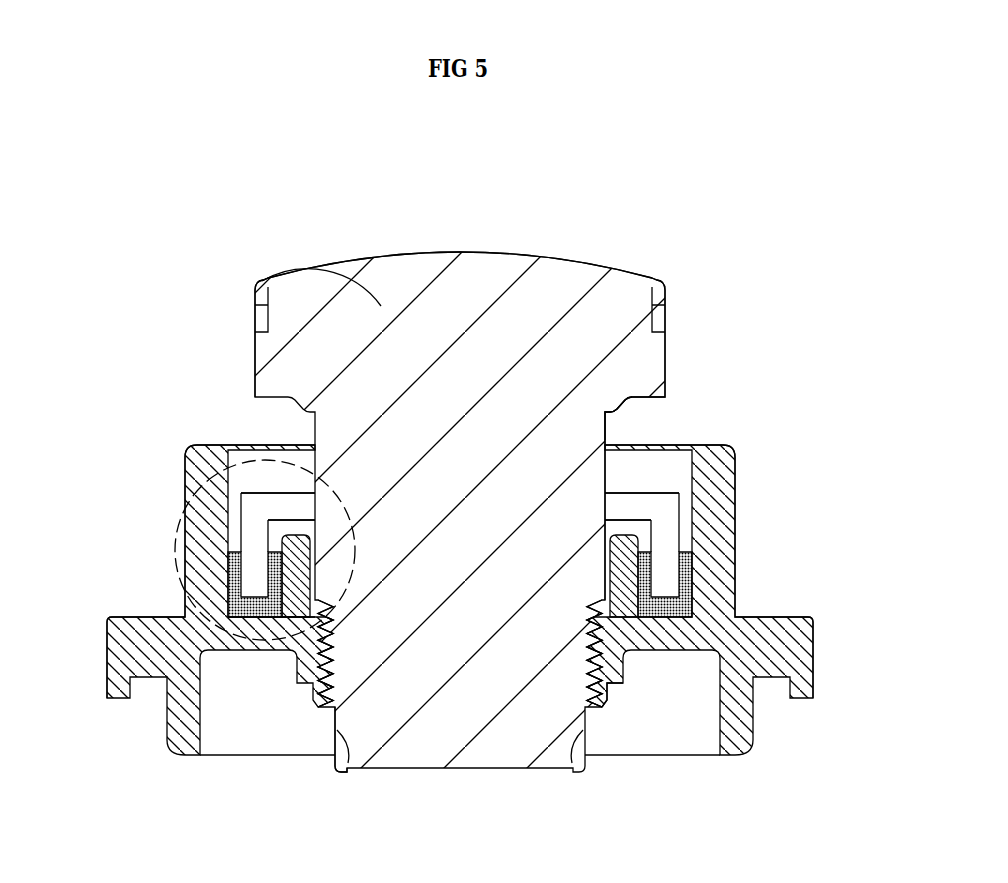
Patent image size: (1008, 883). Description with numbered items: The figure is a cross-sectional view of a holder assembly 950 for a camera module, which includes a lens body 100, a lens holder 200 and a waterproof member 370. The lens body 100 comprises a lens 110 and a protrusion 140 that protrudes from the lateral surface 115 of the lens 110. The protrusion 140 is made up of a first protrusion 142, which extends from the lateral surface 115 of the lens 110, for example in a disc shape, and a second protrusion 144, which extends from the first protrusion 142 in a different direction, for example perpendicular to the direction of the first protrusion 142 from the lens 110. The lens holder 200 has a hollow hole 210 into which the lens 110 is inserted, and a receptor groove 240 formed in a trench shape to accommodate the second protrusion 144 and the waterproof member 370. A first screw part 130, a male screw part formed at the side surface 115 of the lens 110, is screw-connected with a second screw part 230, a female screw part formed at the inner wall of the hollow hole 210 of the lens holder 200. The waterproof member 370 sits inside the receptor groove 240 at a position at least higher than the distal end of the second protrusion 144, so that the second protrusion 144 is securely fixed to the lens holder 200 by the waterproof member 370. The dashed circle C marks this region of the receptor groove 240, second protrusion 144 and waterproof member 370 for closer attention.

The lens body 100 is at (496, 243).
The lens 110 is at (293, 268).
The lateral surface 115 is at (607, 430).
The first screw part 130 is at (597, 665).
The protrusion 140 is at (853, 435).
The first protrusion 142 is at (638, 505).
The second protrusion 144 is at (680, 548).
The lens holder 200 is at (168, 588).
The hollow hole 210 is at (343, 773).
The second screw part 230 is at (598, 695).
The receptor groove 240 is at (253, 618).
The waterproof member 370 is at (231, 567).
The holder assembly 950 is at (692, 214).
The detail region C is at (239, 463).